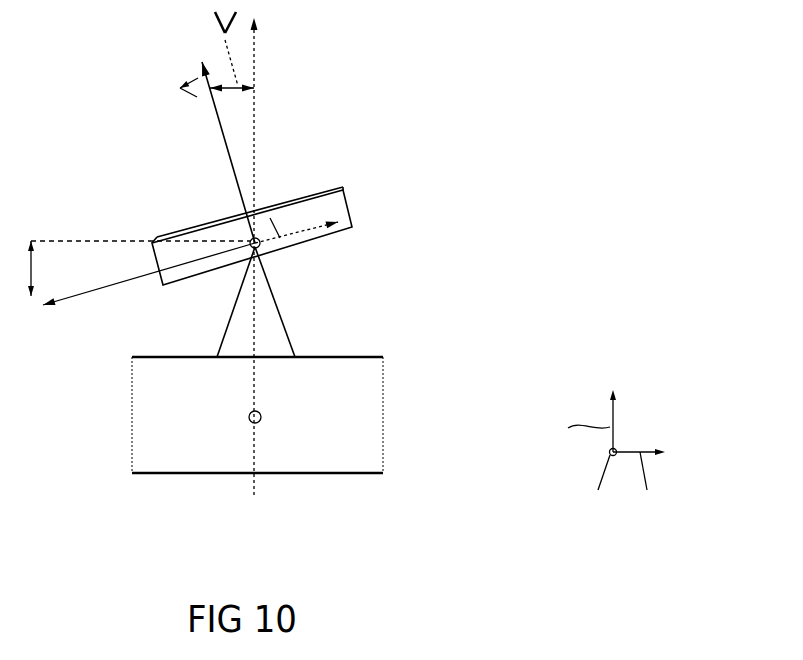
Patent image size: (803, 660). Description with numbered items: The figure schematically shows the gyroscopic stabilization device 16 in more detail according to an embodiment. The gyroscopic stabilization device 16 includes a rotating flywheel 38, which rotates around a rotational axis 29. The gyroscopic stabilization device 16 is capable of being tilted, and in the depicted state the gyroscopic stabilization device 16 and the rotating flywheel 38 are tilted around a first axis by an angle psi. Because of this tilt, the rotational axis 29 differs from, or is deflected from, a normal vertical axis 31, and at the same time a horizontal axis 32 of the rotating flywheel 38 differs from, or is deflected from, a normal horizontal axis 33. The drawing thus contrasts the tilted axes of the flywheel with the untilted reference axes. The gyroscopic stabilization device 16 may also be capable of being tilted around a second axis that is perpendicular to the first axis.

The gyroscopic stabilization device 16 is at (428, 164).
The rotational axis 29 is at (220, 132).
The normal vertical axis 31 is at (257, 52).
The horizontal axis of the rotating flywheel 32 is at (82, 294).
The normal horizontal axis 33 is at (100, 240).
The rotating flywheel 38 is at (306, 190).